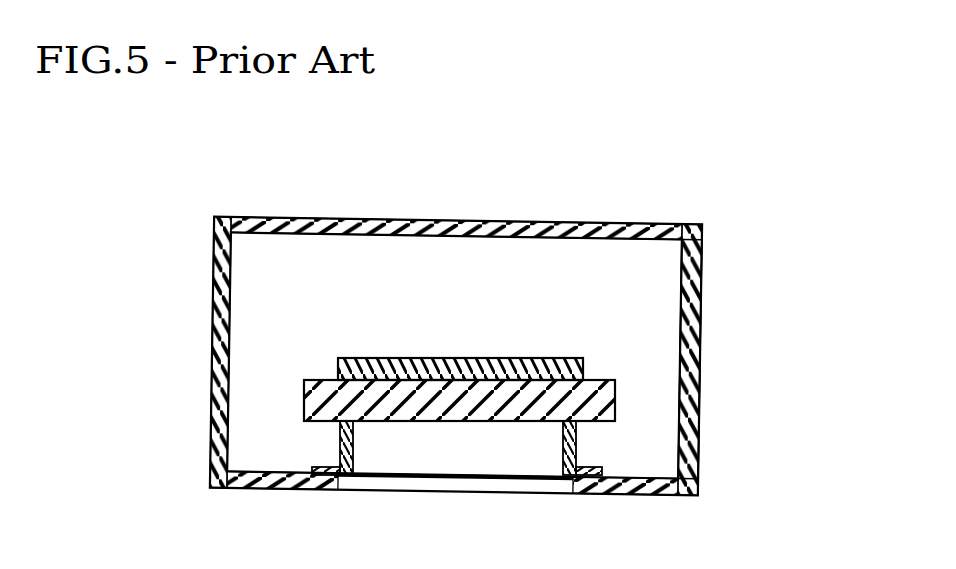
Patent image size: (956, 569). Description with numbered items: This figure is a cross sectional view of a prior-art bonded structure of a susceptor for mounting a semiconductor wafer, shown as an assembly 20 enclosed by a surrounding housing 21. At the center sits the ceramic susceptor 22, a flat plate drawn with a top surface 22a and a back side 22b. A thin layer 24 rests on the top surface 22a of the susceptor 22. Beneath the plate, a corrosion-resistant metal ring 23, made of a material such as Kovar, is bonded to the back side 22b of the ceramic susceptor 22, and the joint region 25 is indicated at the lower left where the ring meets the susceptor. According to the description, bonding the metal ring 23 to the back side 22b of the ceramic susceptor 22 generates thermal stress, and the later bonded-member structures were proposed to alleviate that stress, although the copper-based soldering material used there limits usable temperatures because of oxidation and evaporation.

The semiconductor package (prior art) 20 is at (652, 218).
The package case / housing 21 is at (698, 304).
The ceramic susceptor 22 is at (628, 405).
The upper surface of substrate 22a is at (594, 380).
The back side of the ceramic susceptor 22b is at (408, 421).
The corrosion-resistant metal ring 23 is at (596, 441).
The semiconductor chip 24 is at (385, 357).
The solder joint / support 25 is at (340, 422).